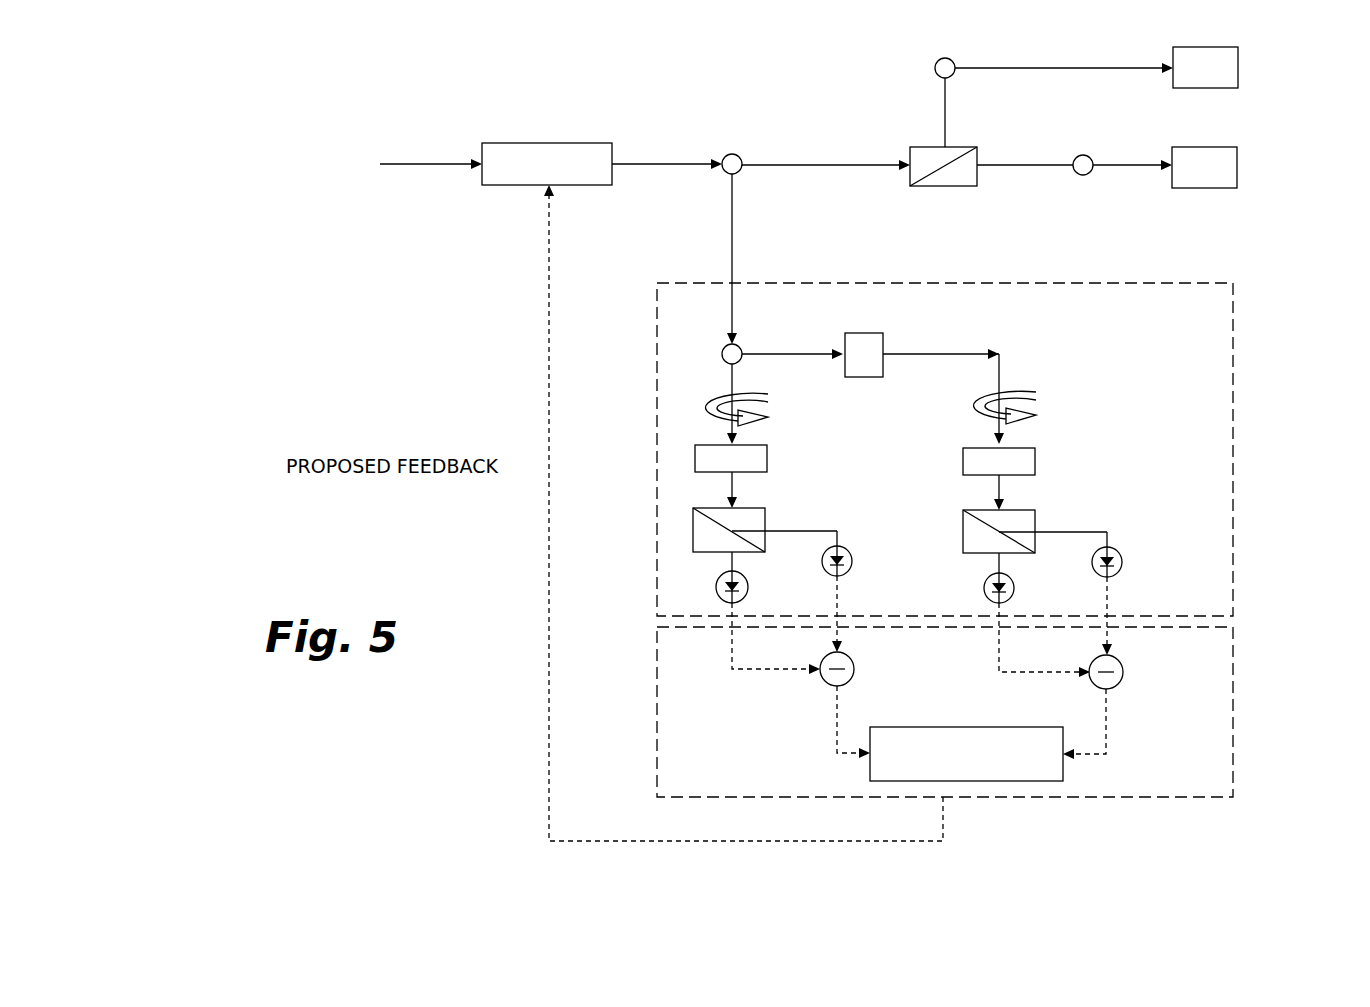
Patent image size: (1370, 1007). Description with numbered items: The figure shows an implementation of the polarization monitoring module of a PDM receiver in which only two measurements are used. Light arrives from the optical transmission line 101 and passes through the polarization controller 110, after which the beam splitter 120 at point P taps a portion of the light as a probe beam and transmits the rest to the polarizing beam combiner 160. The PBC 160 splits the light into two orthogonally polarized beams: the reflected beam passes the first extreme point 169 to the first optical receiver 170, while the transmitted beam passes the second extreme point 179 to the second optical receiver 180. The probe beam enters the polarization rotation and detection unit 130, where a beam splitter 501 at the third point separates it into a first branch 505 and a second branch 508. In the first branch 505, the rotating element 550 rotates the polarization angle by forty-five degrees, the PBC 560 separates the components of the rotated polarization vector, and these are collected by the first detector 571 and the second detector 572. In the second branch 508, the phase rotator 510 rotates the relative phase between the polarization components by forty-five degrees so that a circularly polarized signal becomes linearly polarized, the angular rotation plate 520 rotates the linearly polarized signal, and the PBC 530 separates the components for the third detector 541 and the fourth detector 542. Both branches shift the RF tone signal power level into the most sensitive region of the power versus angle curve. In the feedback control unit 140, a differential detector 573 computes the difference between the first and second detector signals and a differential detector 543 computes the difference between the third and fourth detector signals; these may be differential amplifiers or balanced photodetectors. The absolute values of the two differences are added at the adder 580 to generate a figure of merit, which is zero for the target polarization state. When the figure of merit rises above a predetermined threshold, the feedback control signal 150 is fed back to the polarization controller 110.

The optical transmission line 101 is at (392, 163).
The polarization controller 110 is at (578, 143).
The beam splitter 120 is at (742, 160).
The polarizing beam combiner 160 is at (977, 157).
The point P1 169 is at (955, 64).
The first optical receiver 170 is at (1238, 66).
The point P2 179 is at (1093, 161).
The second optical receiver 180 is at (1237, 165).
The polarization rotation and detection unit 130 is at (1233, 412).
The feedback control unit 140 is at (1233, 765).
The feedback control signal 150 is at (803, 842).
The beam splitter 501 is at (722, 352).
The first branch 505 is at (732, 378).
The second branch 508 is at (770, 354).
The phase rotator 510 is at (883, 349).
The angular rotation plate 520 is at (1035, 460).
The PBC 530 is at (1035, 513).
The detector D3 541 is at (987, 587).
The detector D4 542 is at (1120, 548).
The differential detector 543 is at (1123, 672).
The rotating element 550 is at (695, 460).
The PBC 560 is at (693, 520).
The detector D1 571 is at (716, 587).
The detector D2 572 is at (850, 547).
The differential detector 573 is at (822, 684).
The absolute value adder 580 is at (975, 727).